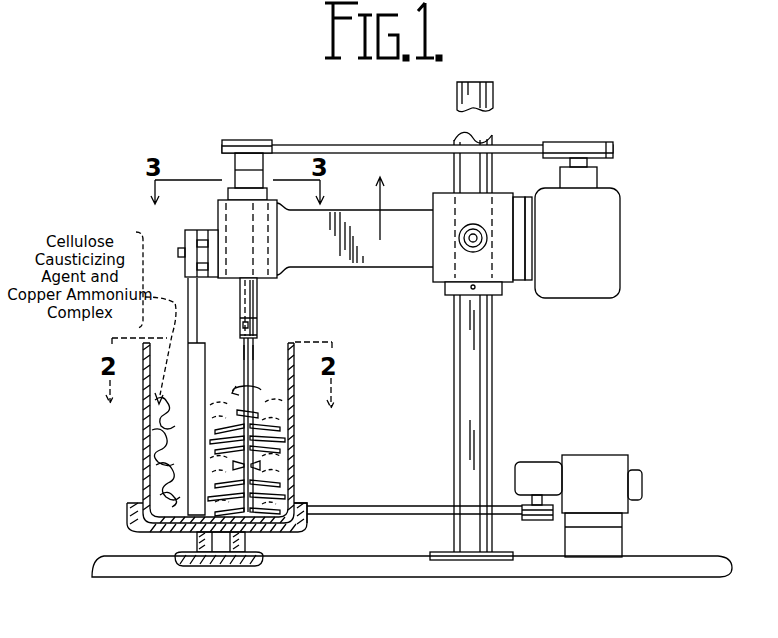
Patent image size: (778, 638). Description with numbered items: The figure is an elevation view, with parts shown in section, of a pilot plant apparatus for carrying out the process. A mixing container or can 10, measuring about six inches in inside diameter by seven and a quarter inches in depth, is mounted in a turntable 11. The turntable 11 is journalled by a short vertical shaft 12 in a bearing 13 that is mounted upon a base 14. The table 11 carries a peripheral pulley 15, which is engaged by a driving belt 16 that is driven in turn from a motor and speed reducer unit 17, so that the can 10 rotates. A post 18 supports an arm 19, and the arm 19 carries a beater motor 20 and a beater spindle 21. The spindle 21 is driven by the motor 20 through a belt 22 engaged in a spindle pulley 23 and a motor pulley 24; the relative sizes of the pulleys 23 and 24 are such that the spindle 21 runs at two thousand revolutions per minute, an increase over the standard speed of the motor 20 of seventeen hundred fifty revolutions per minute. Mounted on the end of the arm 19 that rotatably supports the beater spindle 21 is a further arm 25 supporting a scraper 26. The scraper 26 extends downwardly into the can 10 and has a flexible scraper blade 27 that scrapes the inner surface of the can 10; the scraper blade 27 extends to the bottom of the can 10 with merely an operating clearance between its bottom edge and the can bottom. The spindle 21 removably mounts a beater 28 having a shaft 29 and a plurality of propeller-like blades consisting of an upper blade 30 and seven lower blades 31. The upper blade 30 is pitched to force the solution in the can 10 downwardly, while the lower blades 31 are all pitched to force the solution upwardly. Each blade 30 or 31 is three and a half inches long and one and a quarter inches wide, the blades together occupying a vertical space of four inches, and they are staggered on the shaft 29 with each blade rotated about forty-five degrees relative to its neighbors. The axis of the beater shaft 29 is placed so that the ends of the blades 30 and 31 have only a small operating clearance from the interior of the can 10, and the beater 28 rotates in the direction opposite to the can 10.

The mixing container or can 10 is at (143, 443).
The turntable 11 is at (300, 530).
The short vertical shaft 12 is at (246, 542).
The bearing 13 is at (262, 566).
The base 14 is at (356, 577).
The peripheral pulley 15 is at (310, 517).
The driving belt 16 is at (400, 505).
The motor and speed reducer unit 17 is at (645, 522).
The post 18 is at (493, 430).
The arm 19 is at (392, 268).
The beater motor 20 is at (583, 300).
The beater spindle 21 is at (257, 306).
The belt 22 is at (380, 145).
The spindle pulley 23 is at (279, 141).
The motor pulley 24 is at (613, 149).
The arm 25 is at (185, 267).
The scraper 26 is at (188, 318).
The flexible scraper blade 27 is at (200, 383).
The beater 28 is at (279, 419).
The shaft 29 is at (255, 362).
The upper blade 30 is at (265, 400).
The lower blades 31 is at (284, 440).